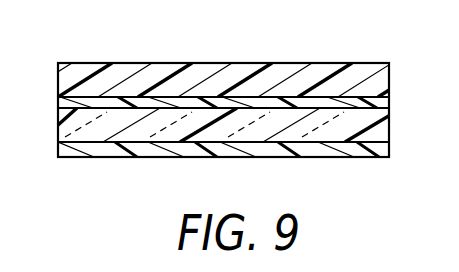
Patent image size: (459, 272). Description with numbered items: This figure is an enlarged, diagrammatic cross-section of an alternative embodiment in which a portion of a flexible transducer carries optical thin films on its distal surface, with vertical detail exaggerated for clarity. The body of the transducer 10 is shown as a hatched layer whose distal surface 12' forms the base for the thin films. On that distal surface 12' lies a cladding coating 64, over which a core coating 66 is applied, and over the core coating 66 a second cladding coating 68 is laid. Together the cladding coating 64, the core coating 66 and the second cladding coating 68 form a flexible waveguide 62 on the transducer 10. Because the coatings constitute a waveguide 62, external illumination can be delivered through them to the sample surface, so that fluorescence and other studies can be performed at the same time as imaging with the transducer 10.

The transducer 10 is at (90, 63).
The distal surface 12' is at (225, 63).
The cladding coating 64 is at (166, 110).
The waveguide 62 is at (58, 124).
The core coating 66 is at (162, 136).
The second cladding coating 68 is at (233, 158).